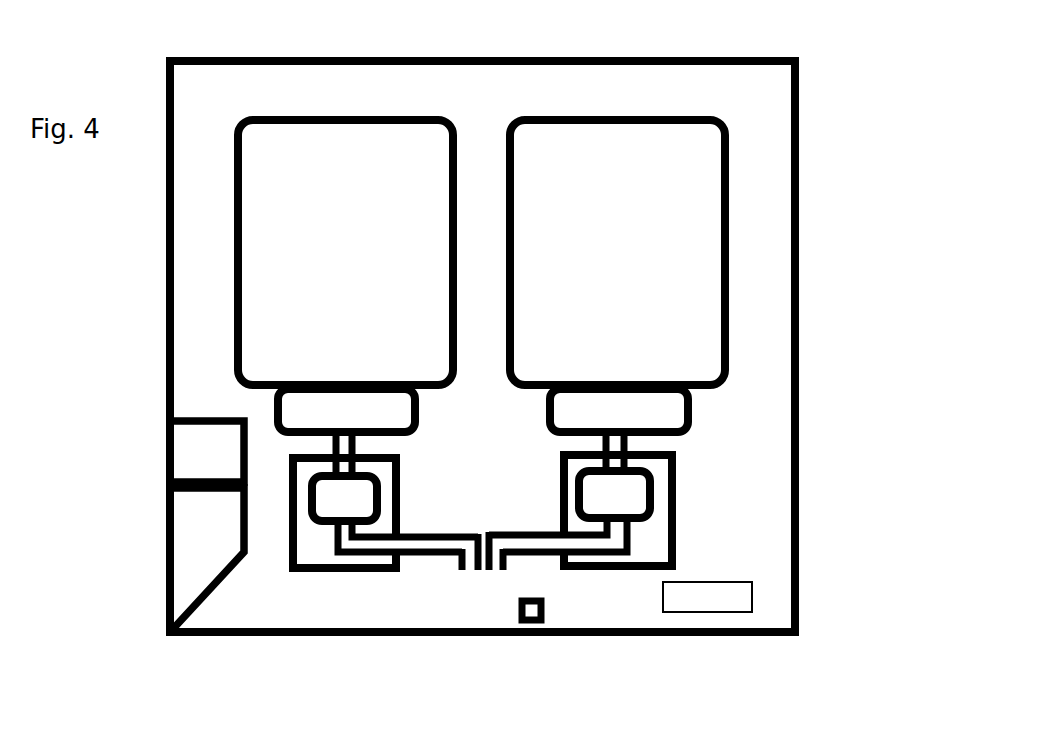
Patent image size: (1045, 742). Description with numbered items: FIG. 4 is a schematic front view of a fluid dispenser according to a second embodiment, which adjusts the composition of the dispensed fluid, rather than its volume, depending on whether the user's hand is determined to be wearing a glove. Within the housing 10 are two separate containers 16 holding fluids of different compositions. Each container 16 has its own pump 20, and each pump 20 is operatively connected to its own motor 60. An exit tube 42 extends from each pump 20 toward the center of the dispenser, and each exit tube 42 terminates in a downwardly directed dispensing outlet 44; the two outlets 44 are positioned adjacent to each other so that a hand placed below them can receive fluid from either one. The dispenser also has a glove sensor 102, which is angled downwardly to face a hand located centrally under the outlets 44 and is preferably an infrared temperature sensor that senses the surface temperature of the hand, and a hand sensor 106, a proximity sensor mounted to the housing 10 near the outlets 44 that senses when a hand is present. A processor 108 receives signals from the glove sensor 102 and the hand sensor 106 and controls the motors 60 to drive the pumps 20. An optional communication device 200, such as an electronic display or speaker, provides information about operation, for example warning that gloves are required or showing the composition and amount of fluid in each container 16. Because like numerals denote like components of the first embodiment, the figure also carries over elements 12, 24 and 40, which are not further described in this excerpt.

The housing 10 is at (773, 85).
The cell 12 is at (481, 252).
The container 16 is at (257, 245).
The contact pad 24 is at (293, 403).
The connection stem 40 is at (333, 448).
The pump 20 is at (320, 498).
The motor 60 is at (313, 550).
The exit tube 42 is at (418, 545).
The dispensing outlet 44 is at (472, 573).
The hand sensor 106 is at (530, 615).
The communication device 200 is at (740, 598).
The processor 108 is at (207, 451).
The glove sensor 102 is at (207, 559).